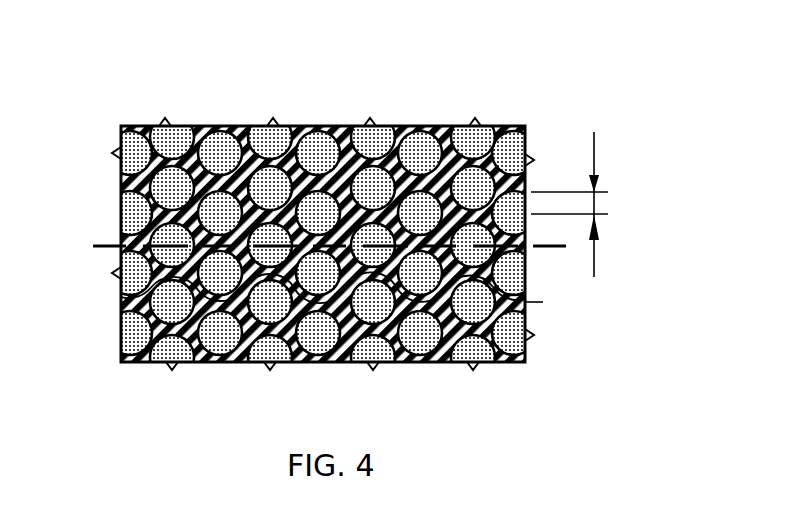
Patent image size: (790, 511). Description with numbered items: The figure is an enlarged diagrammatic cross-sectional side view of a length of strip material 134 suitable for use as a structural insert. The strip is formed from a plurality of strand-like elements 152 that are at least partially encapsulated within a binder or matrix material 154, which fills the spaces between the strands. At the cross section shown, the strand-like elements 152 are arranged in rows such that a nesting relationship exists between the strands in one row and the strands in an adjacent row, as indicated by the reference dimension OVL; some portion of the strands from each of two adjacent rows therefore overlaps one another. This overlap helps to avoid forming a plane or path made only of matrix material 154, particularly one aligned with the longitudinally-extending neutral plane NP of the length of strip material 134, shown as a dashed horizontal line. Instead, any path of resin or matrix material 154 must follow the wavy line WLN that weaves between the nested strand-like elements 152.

The length of strip material 134 is at (354, 202).
The strand-like elements 152 is at (220, 213).
The binder or matrix material 154 is at (336, 127).
The neutral plane NP is at (108, 245).
The reference dimension OVL is at (595, 146).
The wavy line WLN is at (551, 291).